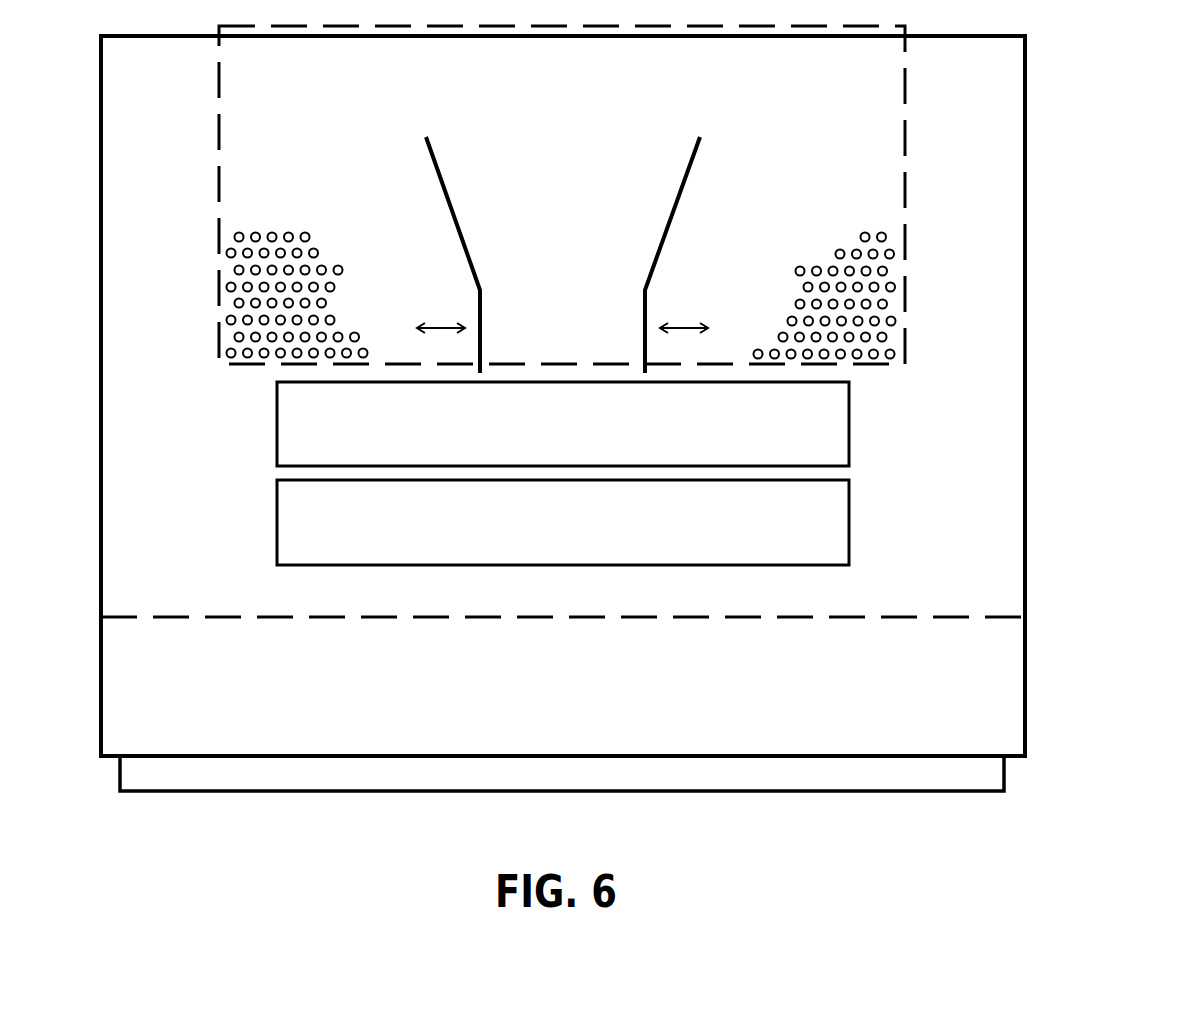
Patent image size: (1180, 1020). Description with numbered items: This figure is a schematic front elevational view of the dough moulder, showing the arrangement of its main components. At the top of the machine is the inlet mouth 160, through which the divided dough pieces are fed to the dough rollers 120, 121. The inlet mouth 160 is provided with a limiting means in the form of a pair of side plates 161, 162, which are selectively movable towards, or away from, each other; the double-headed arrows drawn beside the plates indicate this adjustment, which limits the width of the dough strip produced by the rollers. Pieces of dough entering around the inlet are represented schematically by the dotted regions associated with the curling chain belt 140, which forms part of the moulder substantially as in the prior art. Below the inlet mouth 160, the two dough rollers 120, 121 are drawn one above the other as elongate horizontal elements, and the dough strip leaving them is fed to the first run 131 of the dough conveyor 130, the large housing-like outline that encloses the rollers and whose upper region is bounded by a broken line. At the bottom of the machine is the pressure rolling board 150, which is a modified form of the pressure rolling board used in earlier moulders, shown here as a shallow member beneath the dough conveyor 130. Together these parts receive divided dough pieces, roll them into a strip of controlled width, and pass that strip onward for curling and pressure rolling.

The dough roller 120 is at (853, 427).
The dough roller 121 is at (853, 524).
The dough conveyor 130 is at (1027, 667).
The first run 131 is at (992, 532).
The curling chain belt 140 is at (890, 284).
The pressure rolling board 150 is at (830, 770).
The inlet mouth 160 is at (498, 173).
The side plate 161 is at (446, 196).
The side plate 162 is at (651, 271).